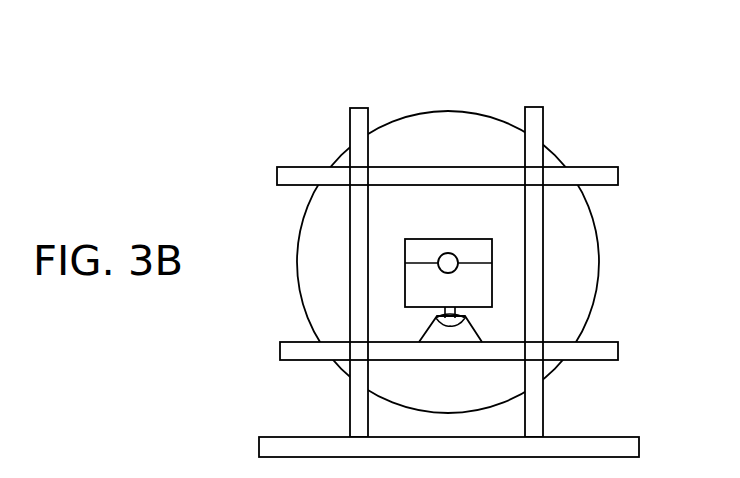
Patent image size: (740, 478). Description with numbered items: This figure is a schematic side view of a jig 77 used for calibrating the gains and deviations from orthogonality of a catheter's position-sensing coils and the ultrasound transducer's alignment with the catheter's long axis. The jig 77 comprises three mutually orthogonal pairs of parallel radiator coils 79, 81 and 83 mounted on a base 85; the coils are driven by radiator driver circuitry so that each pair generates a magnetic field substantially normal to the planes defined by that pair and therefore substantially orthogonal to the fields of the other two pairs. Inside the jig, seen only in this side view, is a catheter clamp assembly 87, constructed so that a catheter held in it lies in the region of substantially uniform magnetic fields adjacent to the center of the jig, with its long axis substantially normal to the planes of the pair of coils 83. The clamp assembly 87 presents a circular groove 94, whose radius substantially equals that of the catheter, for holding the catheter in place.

The jig 77 is at (293, 124).
The radiator coils 79 is at (357, 108).
The radiator coils 81 is at (618, 177).
The radiator coils 83 is at (297, 272).
The base 85 is at (599, 437).
The catheter clamp assembly 87 is at (402, 281).
The circular groove 94 is at (448, 253).